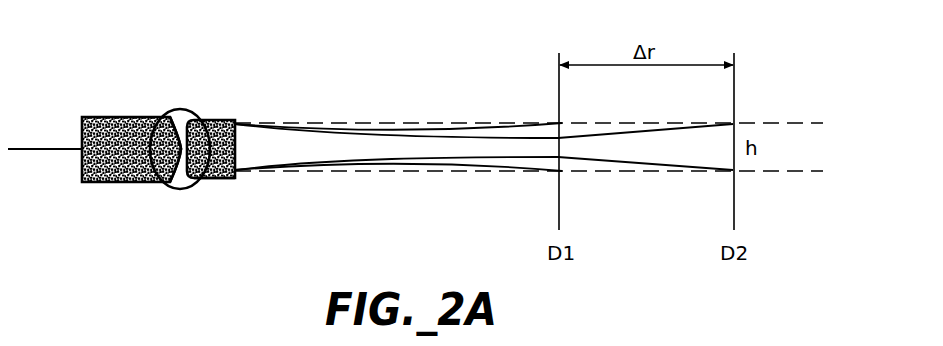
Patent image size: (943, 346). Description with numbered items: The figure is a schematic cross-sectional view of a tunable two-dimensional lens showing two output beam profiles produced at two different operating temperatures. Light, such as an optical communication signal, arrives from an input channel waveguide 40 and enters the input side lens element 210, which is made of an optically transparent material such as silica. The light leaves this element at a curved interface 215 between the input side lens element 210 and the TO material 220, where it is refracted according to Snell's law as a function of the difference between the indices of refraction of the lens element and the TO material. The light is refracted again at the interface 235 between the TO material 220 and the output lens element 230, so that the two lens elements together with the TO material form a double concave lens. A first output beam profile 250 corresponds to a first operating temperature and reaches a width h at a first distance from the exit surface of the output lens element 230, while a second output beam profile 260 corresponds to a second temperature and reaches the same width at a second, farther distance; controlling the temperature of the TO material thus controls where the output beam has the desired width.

The input channel waveguide 40 is at (21, 150).
The input side lens element 210 is at (118, 117).
The curved interface 215 is at (163, 178).
The TO material 220 is at (180, 108).
The output lens element 230 is at (213, 120).
The interface 235 is at (208, 182).
The first output beam profile 250 is at (417, 127).
The second output beam profile 260 is at (472, 162).